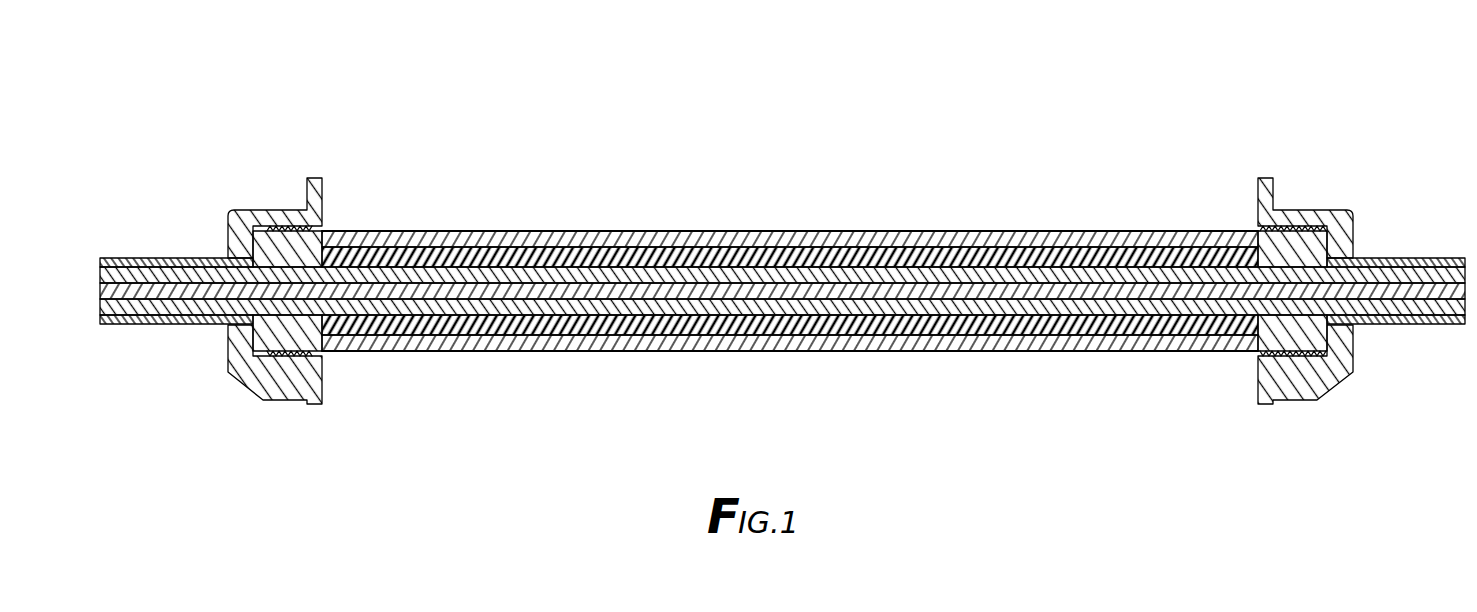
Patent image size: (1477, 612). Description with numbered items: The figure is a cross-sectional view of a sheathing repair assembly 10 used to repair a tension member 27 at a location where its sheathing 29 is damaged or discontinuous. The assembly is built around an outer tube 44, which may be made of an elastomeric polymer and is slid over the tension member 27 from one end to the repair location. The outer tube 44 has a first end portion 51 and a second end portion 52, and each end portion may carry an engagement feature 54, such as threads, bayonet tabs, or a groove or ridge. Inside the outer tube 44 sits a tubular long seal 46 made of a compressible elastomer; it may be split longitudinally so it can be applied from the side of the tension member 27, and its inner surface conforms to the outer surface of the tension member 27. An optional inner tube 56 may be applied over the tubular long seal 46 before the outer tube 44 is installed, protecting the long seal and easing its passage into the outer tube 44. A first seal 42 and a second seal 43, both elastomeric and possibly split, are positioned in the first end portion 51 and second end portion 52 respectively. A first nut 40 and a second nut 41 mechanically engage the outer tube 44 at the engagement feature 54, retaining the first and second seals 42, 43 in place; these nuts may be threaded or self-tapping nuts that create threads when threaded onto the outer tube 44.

The sheathing repair assembly 10 is at (492, 88).
The tension member 27 is at (122, 258).
The sheathing 29 is at (178, 325).
The first nut 40 is at (245, 210).
The second nut 41 is at (1353, 222).
The first seal 42 is at (360, 233).
The second seal 43 is at (1182, 238).
The outer tube 44 is at (563, 255).
The tubular long seal 46 is at (717, 280).
The first end portion 51 is at (397, 355).
The second end portion 52 is at (1160, 357).
The engagement feature 54 is at (323, 230).
The inner tube 56 is at (858, 232).